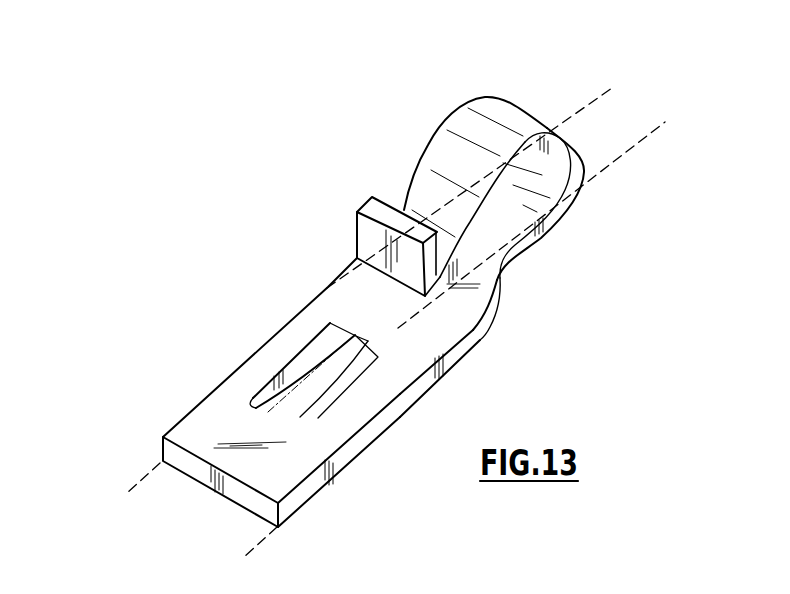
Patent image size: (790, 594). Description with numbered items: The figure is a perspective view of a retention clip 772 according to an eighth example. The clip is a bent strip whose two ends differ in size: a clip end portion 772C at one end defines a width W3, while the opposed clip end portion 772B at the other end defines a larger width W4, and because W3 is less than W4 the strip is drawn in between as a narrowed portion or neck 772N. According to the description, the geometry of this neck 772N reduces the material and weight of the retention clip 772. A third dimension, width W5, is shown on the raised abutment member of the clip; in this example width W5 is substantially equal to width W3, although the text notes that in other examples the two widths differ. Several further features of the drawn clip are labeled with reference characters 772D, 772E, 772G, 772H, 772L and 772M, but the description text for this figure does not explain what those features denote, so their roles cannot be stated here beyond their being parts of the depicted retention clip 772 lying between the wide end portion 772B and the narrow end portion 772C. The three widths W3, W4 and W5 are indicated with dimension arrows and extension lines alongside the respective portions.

The retention clip 772 is at (178, 182).
The clip end portion 772B is at (283, 481).
The clip end portion 772C is at (585, 153).
The arm portion 772D is at (457, 352).
The top edge of base plate 772E is at (223, 388).
The slot 772G is at (310, 328).
The hook portion 772H is at (437, 132).
The lance tab 772L is at (302, 356).
The stop block 772M is at (357, 208).
The neck 772N is at (513, 213).
The width W3 is at (687, 145).
The width W4 is at (275, 578).
The width W5 is at (432, 343).